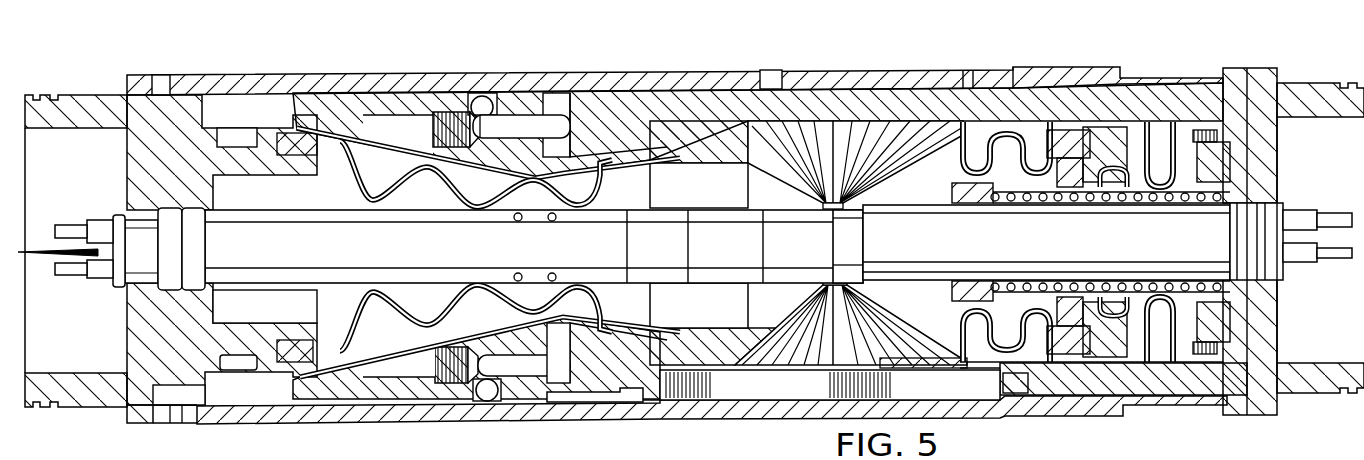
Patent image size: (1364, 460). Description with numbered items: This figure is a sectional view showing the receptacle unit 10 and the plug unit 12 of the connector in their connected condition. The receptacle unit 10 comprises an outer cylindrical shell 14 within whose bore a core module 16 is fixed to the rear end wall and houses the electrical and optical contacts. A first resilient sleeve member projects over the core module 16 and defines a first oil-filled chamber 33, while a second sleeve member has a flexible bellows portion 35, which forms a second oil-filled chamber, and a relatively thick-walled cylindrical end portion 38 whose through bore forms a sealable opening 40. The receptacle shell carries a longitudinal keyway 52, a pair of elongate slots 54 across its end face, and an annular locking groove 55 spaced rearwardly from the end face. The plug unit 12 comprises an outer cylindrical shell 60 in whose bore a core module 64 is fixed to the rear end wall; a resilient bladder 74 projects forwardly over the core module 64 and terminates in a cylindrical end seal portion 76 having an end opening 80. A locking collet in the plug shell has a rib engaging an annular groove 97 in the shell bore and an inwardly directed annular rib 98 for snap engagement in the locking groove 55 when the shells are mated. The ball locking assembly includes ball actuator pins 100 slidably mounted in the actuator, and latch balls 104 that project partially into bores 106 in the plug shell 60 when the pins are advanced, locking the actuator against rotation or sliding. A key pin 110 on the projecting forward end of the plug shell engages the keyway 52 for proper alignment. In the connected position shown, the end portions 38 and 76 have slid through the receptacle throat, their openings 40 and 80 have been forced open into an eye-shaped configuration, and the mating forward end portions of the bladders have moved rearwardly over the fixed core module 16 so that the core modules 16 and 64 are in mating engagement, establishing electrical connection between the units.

The receptacle unit 10 is at (1302, 62).
The plug unit 12 is at (294, 64).
The outer cylindrical shell 14 is at (1077, 100).
The core module 16 is at (1183, 255).
The first oil-filled chamber 33 is at (1156, 122).
The flexible bellows portion 35 is at (987, 155).
The cylindrical end portion 38 is at (845, 150).
The sealable opening 40 is at (842, 286).
The longitudinal keyway 52 is at (940, 390).
The elongate slots 54 is at (613, 97).
The annular locking groove 55 is at (656, 401).
The outer cylindrical shell 60 is at (736, 411).
The core module 64 is at (333, 252).
The resilient bladder 74 is at (363, 163).
The cylindrical end seal portion 76 is at (812, 150).
The end opening 80 is at (827, 286).
The annular groove 97 is at (923, 78).
The inwardly directed annular rib 98 is at (624, 400).
The ball actuator pins 100 is at (561, 123).
The latch ball 104 is at (480, 97).
The bores 106 is at (770, 78).
The key pin 110 is at (1013, 391).